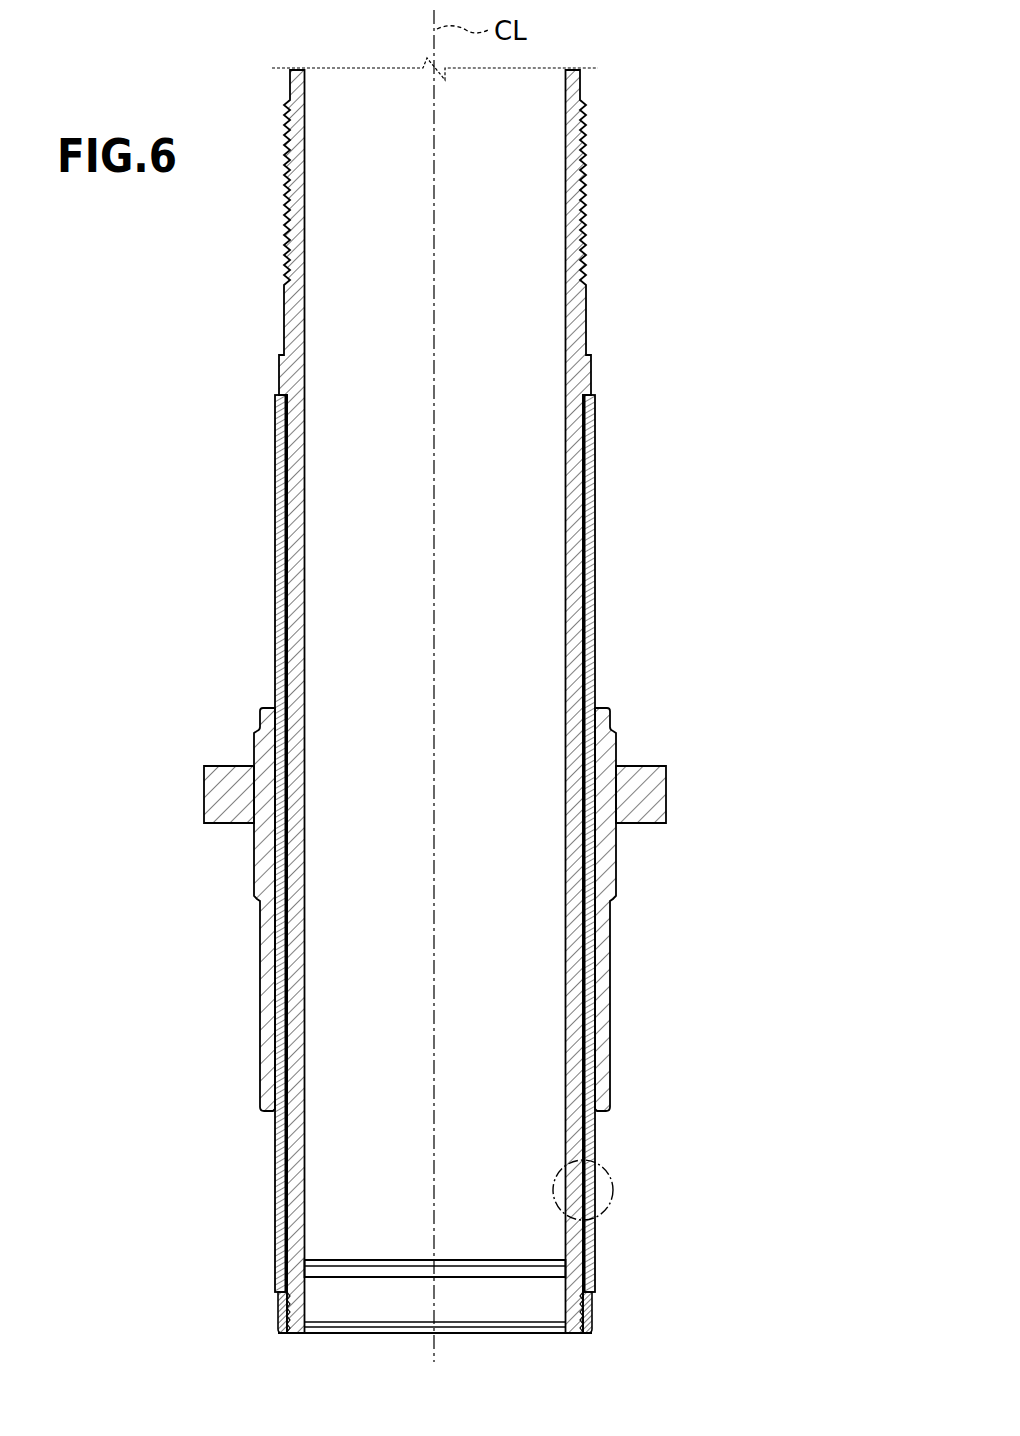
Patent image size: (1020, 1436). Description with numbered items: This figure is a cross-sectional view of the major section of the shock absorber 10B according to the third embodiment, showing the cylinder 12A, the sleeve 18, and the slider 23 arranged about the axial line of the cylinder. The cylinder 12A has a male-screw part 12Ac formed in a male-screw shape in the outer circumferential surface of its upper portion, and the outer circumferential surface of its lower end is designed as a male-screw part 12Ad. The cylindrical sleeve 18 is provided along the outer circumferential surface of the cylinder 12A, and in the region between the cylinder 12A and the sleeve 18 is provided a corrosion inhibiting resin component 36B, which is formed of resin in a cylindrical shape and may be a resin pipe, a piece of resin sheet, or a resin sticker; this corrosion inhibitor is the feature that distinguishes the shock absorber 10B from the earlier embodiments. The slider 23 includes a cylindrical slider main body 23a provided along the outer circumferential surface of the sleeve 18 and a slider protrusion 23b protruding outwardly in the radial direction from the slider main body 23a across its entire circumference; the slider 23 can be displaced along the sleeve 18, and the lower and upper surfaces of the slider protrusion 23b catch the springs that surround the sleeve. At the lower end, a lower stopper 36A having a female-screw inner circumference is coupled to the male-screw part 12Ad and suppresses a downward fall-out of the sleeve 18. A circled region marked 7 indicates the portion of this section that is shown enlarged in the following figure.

The shock absorber 10B is at (733, 188).
The cylinder 12A is at (501, 703).
The male-screw part 12Ac is at (590, 178).
The male-screw part 12Ad is at (594, 1312).
The sleeve 18 is at (597, 522).
The corrosion inhibiting resin component 36B is at (586, 622).
The slider 23 is at (510, 909).
The slider main body 23a is at (618, 878).
The slider protrusion 23b is at (667, 795).
The lower stopper 36A is at (278, 1312).
The enlarged portion shown in FIG. 7 is at (605, 1165).